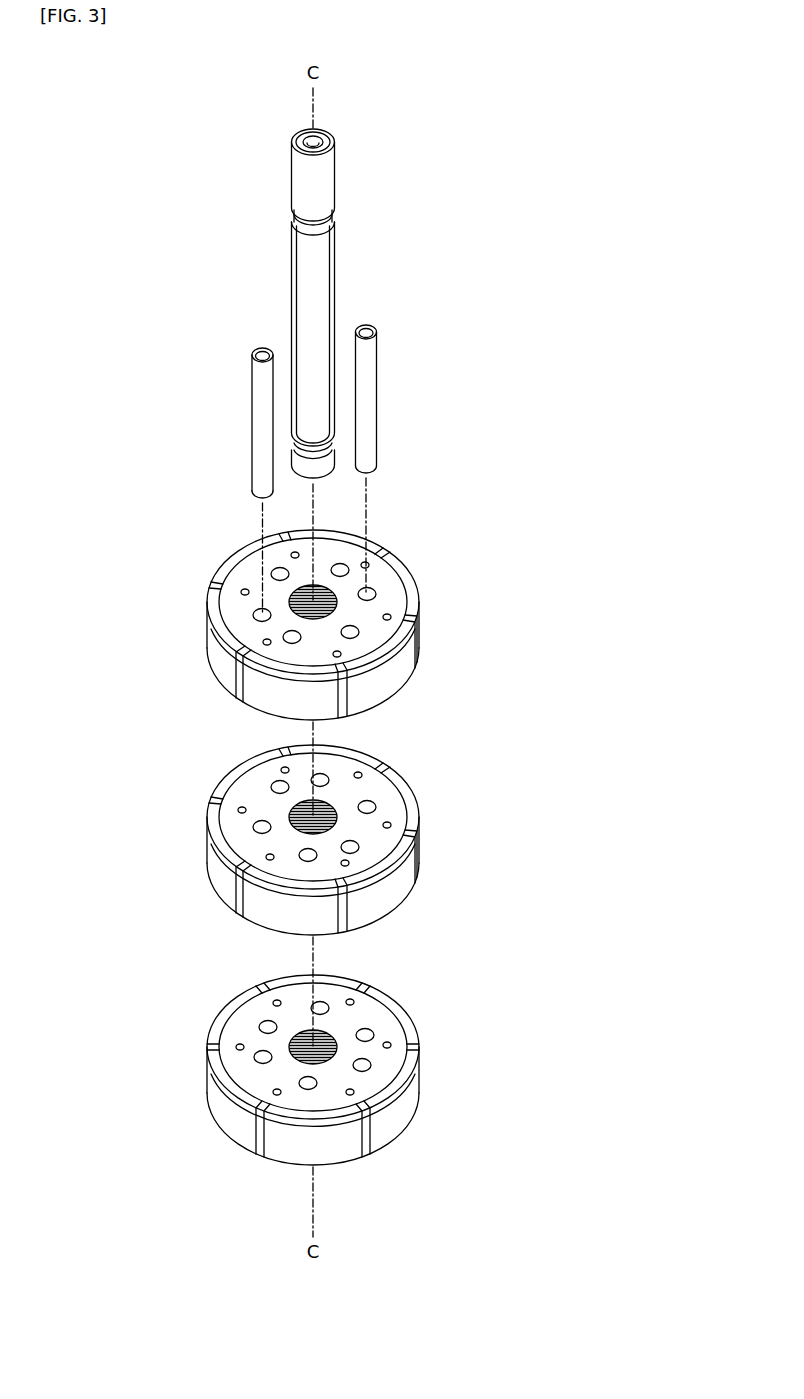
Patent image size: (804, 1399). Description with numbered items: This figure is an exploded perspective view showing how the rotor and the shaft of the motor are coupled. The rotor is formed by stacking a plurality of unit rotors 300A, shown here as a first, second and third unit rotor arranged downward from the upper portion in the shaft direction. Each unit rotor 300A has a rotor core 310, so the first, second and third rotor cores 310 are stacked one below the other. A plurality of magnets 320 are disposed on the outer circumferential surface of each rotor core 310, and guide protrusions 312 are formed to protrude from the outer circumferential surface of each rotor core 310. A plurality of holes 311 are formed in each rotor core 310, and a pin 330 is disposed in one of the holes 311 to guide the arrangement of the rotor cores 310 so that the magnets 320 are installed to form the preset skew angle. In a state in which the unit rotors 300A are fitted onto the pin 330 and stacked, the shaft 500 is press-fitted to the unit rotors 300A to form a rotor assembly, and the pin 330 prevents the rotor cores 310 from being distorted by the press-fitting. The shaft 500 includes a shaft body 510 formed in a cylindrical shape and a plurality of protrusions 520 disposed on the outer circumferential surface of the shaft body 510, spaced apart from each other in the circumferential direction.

The shaft 500 is at (407, 167).
The shaft body 510 is at (325, 172).
The protrusions 520 is at (312, 265).
The pin 330 is at (236, 411).
The unit rotor 300A is at (145, 608).
The rotor core 310 is at (250, 572).
The holes 311 is at (352, 630).
The guide protrusions 312 is at (243, 672).
The magnets 320 is at (395, 557).